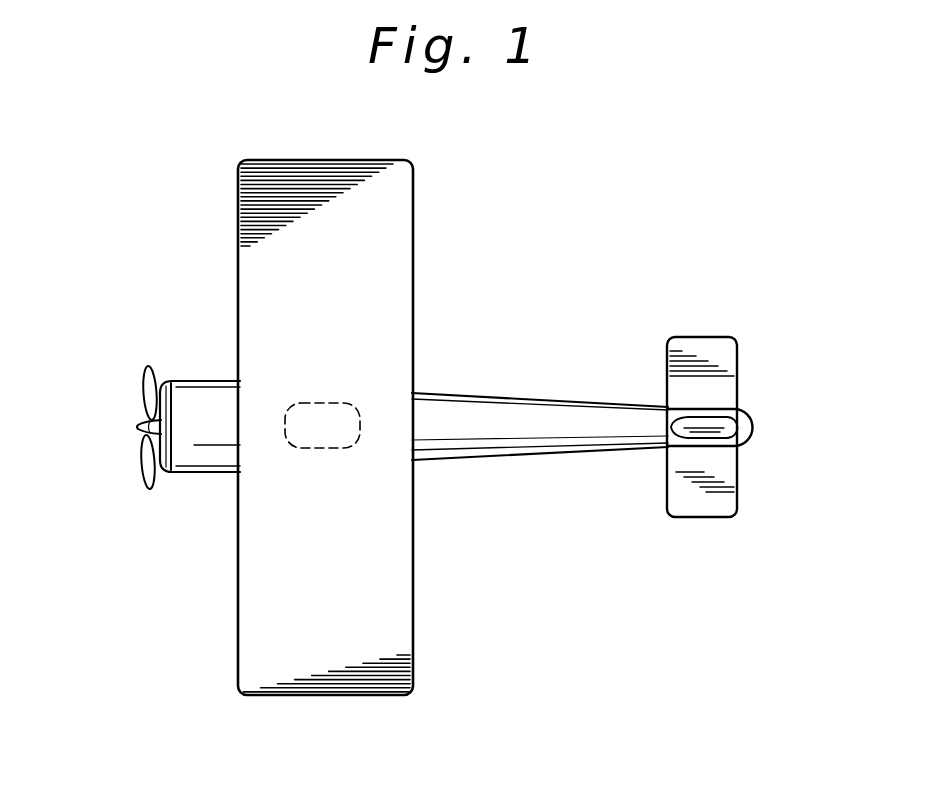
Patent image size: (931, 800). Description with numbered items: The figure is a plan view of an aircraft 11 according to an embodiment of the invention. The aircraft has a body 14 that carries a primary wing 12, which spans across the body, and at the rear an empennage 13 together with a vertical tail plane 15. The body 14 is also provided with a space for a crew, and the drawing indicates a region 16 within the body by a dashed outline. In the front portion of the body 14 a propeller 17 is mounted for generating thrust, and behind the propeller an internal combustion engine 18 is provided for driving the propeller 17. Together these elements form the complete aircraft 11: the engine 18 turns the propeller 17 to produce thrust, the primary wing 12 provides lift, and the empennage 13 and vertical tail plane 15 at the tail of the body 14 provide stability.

The aircraft 11 is at (463, 273).
The primary wing 12 is at (404, 569).
The empennage 13 is at (725, 470).
The body 14 is at (548, 448).
The vertical tail plane 15 is at (702, 426).
The concealed member 16 is at (352, 441).
The propeller 17 is at (143, 388).
The internal combustion engine 18 is at (167, 432).